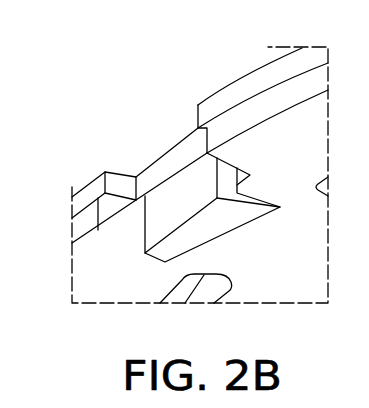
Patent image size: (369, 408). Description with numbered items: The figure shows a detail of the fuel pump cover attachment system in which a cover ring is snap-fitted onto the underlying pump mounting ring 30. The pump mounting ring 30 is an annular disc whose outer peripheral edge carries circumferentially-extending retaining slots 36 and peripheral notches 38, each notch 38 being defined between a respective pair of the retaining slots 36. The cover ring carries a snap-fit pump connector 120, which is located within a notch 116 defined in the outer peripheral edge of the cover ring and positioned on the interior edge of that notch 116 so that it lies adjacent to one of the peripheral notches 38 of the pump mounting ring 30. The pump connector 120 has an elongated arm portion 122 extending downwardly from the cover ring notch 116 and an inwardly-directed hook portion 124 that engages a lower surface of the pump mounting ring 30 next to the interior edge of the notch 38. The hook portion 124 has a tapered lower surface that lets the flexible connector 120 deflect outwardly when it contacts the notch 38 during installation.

The pump mounting ring 30 is at (72, 240).
The retaining slot 36 is at (175, 291).
The notch 38 is at (116, 217).
The notch 116 is at (125, 176).
The pump connector 120 is at (192, 183).
The arm portion 122 is at (162, 210).
The hook portion 124 is at (258, 205).